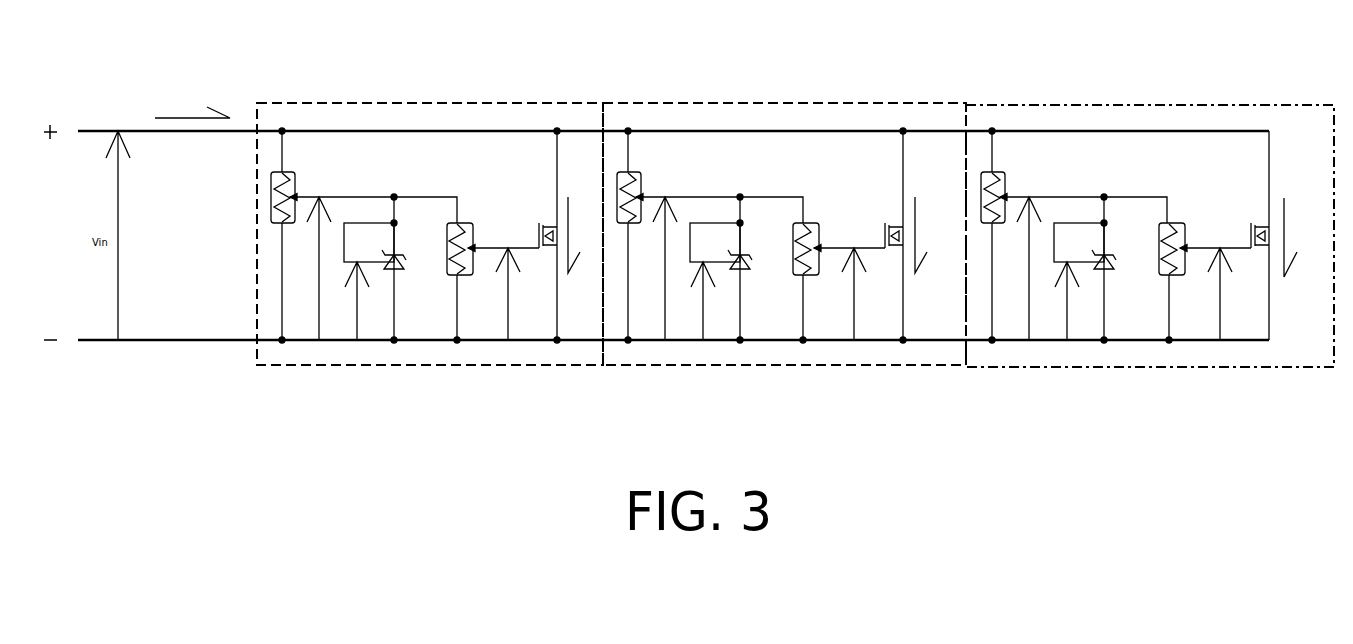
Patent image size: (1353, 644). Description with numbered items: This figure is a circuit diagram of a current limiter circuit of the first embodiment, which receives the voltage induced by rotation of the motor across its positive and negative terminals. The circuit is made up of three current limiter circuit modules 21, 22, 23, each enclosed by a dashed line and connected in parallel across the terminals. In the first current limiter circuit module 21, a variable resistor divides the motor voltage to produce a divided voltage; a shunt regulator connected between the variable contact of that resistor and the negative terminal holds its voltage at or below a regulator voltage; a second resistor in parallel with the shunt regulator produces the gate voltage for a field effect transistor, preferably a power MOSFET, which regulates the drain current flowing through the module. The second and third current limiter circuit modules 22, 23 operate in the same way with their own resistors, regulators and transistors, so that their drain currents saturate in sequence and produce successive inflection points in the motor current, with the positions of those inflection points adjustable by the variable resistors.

The first current limiter circuit module 21 is at (428, 100).
The second current limiter circuit module 22 is at (778, 100).
The third current limiter circuit module 23 is at (1133, 100).